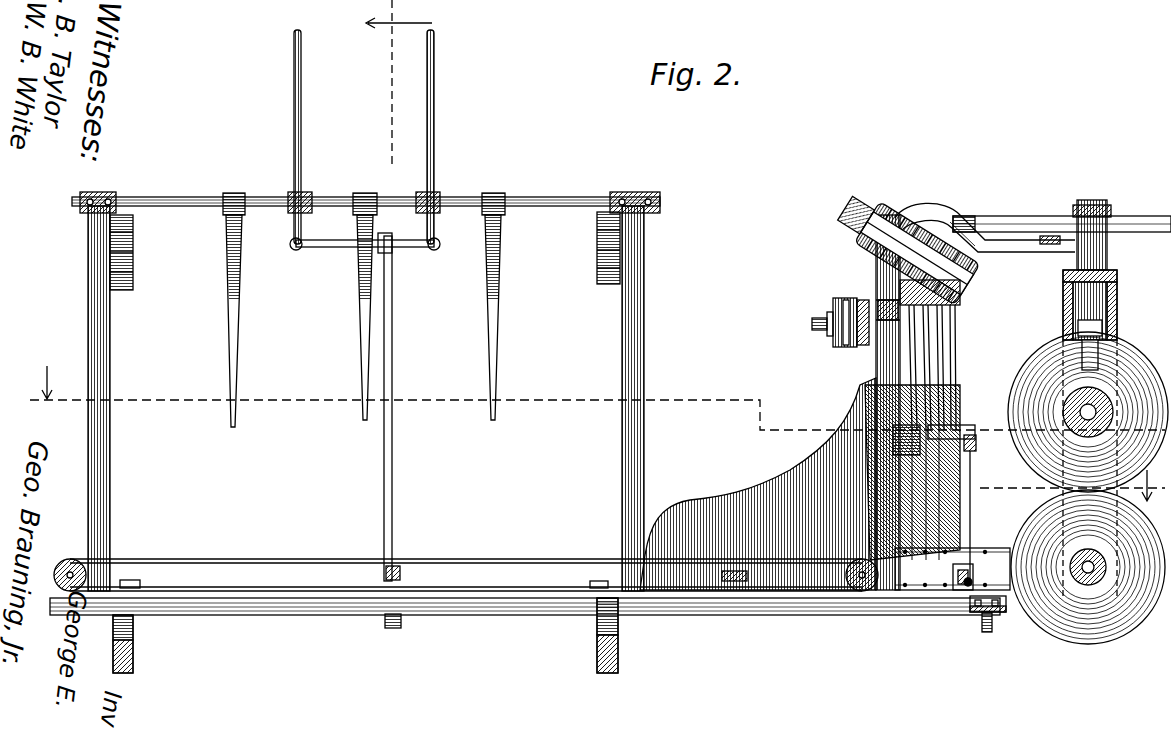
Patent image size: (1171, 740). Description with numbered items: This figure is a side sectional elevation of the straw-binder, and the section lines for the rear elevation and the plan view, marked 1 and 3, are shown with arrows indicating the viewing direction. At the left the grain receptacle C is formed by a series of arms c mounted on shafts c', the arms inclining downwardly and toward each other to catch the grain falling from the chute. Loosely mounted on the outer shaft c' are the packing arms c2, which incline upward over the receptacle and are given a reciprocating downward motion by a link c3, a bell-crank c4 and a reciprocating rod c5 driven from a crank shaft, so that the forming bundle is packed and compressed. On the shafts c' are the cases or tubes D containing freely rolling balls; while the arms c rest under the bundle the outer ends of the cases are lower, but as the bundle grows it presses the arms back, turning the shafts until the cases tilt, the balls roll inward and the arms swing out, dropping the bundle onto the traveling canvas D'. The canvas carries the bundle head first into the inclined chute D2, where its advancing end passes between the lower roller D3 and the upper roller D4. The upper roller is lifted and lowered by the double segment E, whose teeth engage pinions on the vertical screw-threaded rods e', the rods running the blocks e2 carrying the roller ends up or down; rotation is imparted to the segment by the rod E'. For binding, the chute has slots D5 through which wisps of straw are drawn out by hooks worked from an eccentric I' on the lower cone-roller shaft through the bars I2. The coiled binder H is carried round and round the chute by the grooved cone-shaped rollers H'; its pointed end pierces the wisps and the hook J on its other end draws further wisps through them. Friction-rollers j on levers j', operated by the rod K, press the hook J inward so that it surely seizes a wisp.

The beveled gear 1 is at (399, 84).
The section line 3 is at (593, 433).
The receptacle C is at (308, 354).
The arms c is at (351, 310).
The shafts c' is at (366, 213).
The packing arms c2 is at (294, 95).
The link c3 is at (393, 477).
The bell-crank c4 is at (396, 580).
The reciprocating rod c5 is at (398, 568).
The cases or tubes D is at (365, 251).
The traveling canvas D' is at (466, 560).
The chute D2 is at (758, 484).
The lower roller D3 is at (1050, 530).
The upper roller D4 is at (1035, 392).
The slots D5 is at (904, 452).
The double segment gear E is at (1062, 212).
The rod E' is at (985, 251).
The screw-threaded rods e' is at (1110, 321).
The blocks e2 is at (1098, 352).
The twister or binder H is at (951, 432).
The cone-shaped rollers H' is at (951, 302).
The eccentric I' is at (809, 344).
The bars I2 is at (842, 296).
The hook J is at (972, 430).
The friction-rollers j is at (958, 518).
The levers j' is at (982, 445).
The rod K is at (973, 575).